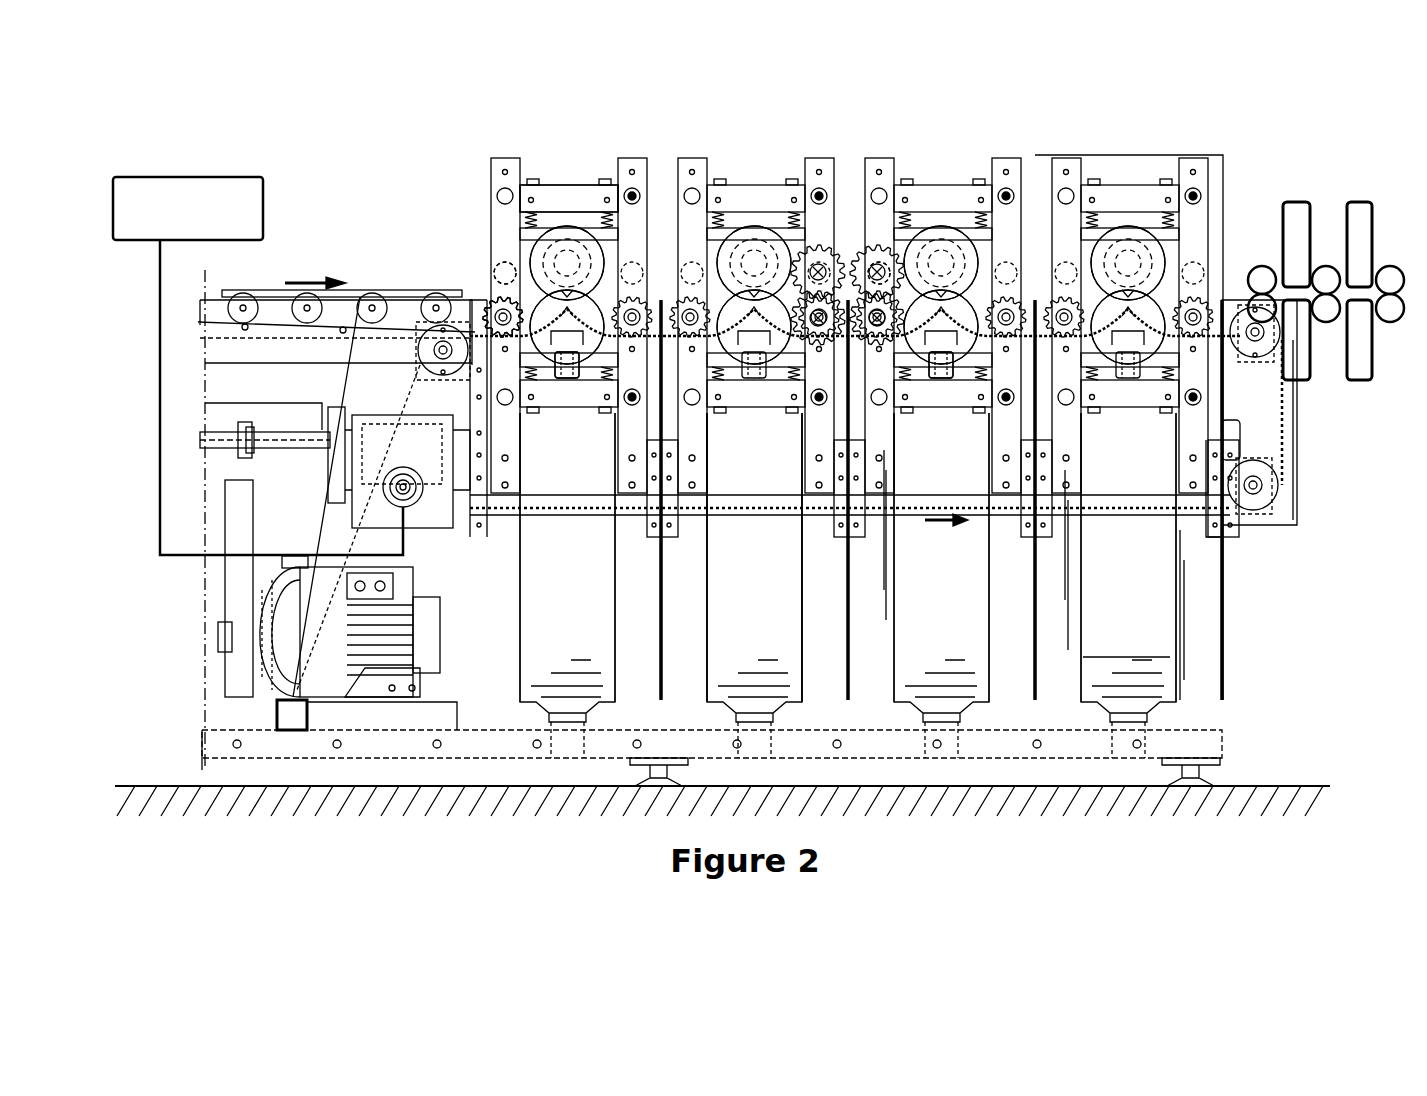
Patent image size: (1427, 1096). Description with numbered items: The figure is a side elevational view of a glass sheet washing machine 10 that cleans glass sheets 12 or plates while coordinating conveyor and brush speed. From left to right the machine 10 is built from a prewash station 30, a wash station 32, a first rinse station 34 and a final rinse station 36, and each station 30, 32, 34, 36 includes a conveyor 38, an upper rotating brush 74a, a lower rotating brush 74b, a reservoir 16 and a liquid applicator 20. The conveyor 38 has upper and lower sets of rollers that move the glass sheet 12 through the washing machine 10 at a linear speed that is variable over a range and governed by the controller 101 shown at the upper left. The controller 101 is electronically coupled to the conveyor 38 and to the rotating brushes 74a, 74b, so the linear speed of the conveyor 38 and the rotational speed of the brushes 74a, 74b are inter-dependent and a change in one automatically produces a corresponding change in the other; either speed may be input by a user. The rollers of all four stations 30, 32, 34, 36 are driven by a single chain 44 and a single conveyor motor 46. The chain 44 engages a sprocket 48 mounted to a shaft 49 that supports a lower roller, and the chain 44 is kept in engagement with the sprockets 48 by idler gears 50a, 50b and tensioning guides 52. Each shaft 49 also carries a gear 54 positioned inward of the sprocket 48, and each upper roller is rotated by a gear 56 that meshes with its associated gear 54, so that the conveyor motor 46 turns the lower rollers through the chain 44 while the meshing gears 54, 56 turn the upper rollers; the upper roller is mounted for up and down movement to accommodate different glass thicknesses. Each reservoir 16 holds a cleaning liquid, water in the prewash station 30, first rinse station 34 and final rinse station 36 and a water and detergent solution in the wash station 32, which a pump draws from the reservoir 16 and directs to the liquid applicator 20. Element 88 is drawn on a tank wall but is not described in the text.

The glass sheet washing machine 10 is at (697, 114).
The glass sheet 12 is at (266, 290).
The reservoir 16 is at (553, 621).
The liquid applicator 20 is at (580, 212).
The prewash station 30 is at (570, 158).
The wash station 32 is at (768, 162).
The first rinse station 34 is at (945, 165).
The final rinse station 36 is at (1130, 180).
The conveyor 38 is at (403, 238).
The chain 44 is at (333, 428).
The conveyor motor 46 is at (388, 498).
The sprocket 48 is at (690, 338).
The shaft 49 is at (740, 335).
The idler gear 50a is at (438, 345).
The idler gear 50b is at (1240, 318).
The tensioning guide 52 is at (562, 332).
The gear 54 is at (545, 255).
The gear 56 is at (500, 248).
The upper rotating brush 74a is at (550, 252).
The lower rotating brush 74b is at (545, 342).
The tank wall 88 is at (757, 473).
The controller 101 is at (232, 185).